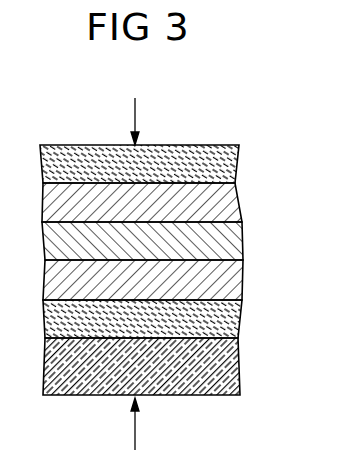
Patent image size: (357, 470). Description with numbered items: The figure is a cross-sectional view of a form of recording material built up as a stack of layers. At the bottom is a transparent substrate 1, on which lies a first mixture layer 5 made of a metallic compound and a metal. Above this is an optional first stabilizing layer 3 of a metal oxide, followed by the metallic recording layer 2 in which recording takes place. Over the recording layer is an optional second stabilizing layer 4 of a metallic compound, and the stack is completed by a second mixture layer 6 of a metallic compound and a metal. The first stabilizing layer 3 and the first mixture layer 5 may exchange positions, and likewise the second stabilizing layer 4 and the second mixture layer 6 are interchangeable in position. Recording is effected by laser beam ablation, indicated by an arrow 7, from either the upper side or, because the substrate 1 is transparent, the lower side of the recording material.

The substrate 1 is at (238, 375).
The metallic recording layer 2 is at (235, 245).
The first stabilizing layer 3 is at (233, 285).
The second stabilizing layer 4 is at (235, 208).
The first mixture layer 5 is at (225, 323).
The second mixture layer 6 is at (238, 167).
The arrow 7 is at (135, 113).